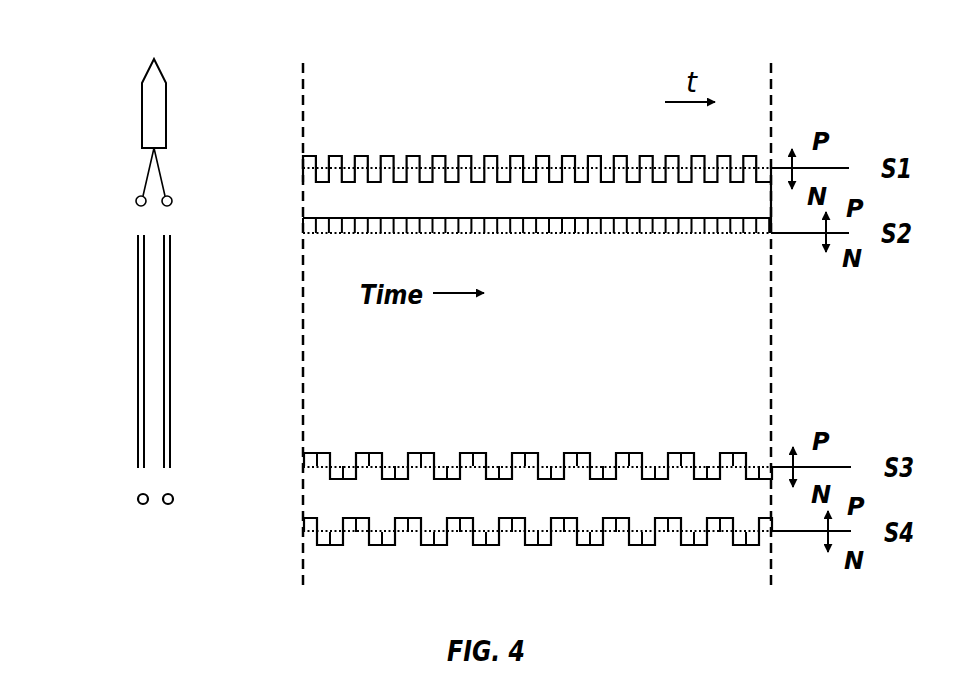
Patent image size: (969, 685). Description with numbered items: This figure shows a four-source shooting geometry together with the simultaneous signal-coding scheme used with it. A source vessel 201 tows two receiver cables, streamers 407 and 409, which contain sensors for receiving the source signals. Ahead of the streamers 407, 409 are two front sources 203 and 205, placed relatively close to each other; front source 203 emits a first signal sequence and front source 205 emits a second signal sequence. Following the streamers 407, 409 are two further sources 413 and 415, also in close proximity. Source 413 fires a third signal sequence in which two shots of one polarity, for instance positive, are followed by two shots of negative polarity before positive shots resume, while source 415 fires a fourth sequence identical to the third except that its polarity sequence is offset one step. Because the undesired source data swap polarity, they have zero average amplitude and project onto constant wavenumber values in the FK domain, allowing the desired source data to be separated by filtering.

The source vessel 201 is at (141, 75).
The front source 203 is at (134, 212).
The front source 205 is at (174, 212).
The streamer 407 is at (137, 347).
The streamer 409 is at (172, 347).
The source 413 is at (137, 511).
The source 415 is at (174, 513).